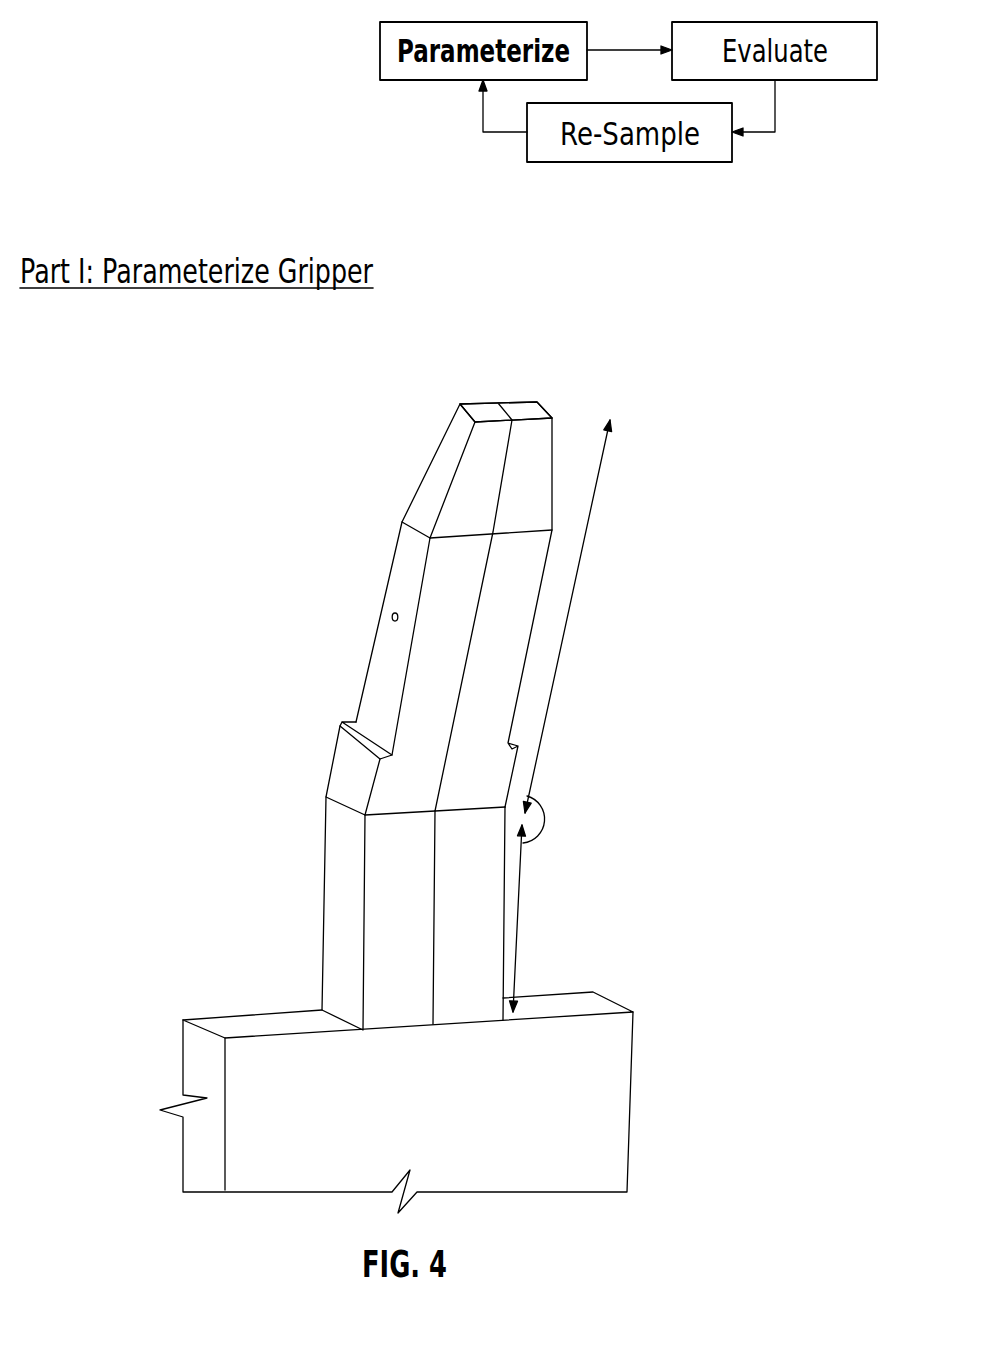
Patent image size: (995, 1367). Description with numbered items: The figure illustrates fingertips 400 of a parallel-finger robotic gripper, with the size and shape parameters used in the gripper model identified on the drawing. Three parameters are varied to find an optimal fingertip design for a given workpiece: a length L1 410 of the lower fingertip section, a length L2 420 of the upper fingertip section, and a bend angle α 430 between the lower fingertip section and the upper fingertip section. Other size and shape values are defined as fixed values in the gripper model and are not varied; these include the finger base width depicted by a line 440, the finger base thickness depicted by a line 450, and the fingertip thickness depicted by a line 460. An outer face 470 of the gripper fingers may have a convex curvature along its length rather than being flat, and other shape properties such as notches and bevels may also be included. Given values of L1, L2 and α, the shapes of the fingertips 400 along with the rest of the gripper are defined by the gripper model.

The fingertips 400 is at (222, 387).
The length L1 of lower fingertip section 410 is at (522, 905).
The length L2 of upper fingertip section 420 is at (572, 602).
The bend angle α 430 is at (542, 820).
The finger base width line 440 is at (420, 813).
The finger base thickness line 450 is at (325, 820).
The fingertip thickness line 460 is at (549, 415).
The outer face 470 is at (392, 614).